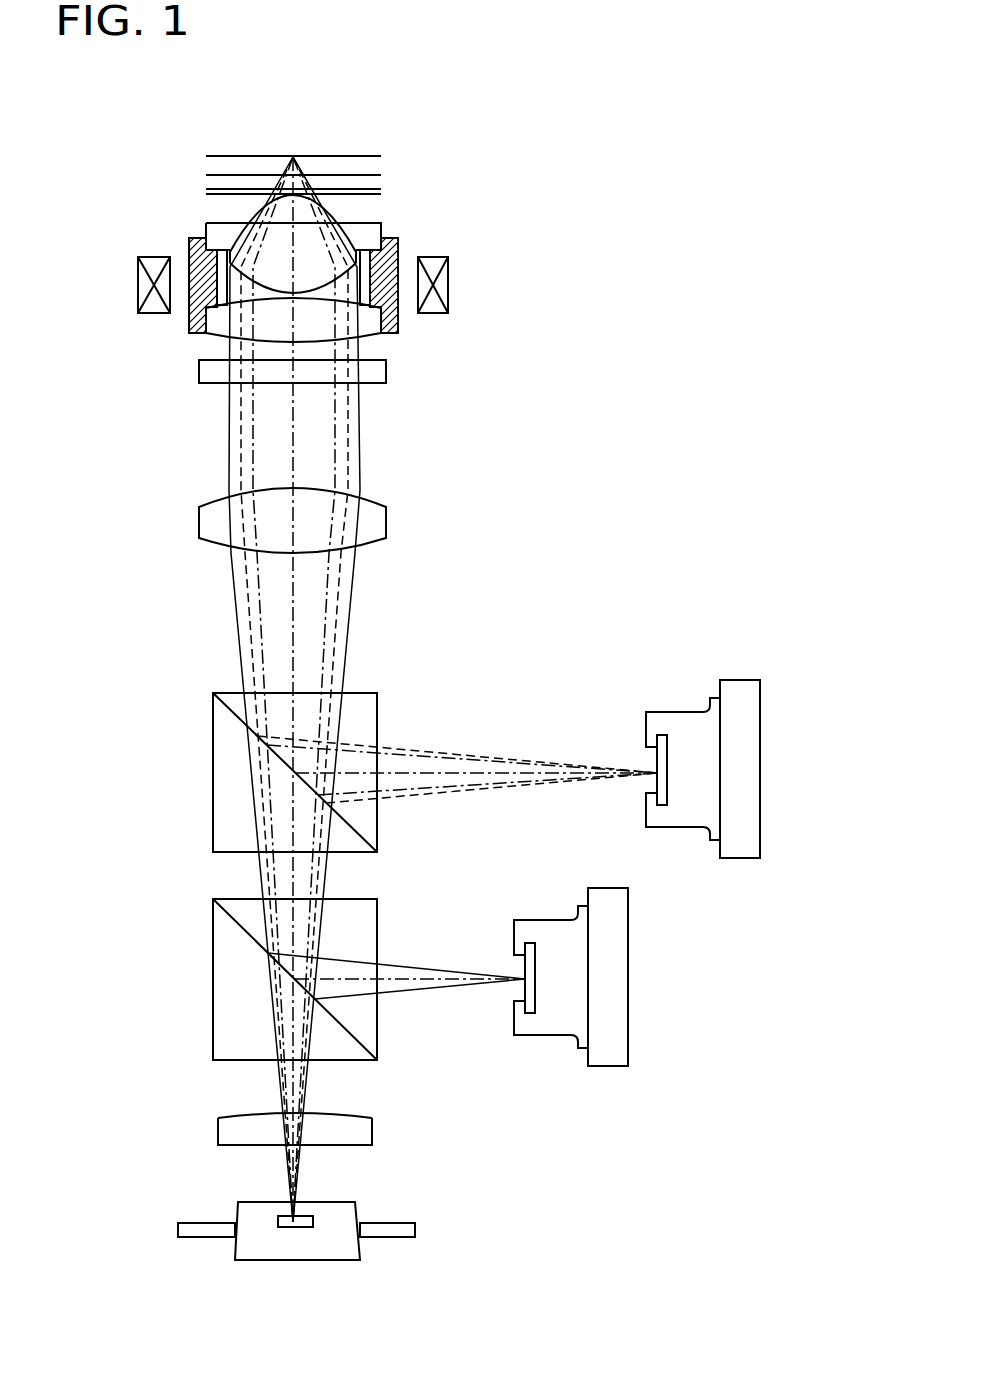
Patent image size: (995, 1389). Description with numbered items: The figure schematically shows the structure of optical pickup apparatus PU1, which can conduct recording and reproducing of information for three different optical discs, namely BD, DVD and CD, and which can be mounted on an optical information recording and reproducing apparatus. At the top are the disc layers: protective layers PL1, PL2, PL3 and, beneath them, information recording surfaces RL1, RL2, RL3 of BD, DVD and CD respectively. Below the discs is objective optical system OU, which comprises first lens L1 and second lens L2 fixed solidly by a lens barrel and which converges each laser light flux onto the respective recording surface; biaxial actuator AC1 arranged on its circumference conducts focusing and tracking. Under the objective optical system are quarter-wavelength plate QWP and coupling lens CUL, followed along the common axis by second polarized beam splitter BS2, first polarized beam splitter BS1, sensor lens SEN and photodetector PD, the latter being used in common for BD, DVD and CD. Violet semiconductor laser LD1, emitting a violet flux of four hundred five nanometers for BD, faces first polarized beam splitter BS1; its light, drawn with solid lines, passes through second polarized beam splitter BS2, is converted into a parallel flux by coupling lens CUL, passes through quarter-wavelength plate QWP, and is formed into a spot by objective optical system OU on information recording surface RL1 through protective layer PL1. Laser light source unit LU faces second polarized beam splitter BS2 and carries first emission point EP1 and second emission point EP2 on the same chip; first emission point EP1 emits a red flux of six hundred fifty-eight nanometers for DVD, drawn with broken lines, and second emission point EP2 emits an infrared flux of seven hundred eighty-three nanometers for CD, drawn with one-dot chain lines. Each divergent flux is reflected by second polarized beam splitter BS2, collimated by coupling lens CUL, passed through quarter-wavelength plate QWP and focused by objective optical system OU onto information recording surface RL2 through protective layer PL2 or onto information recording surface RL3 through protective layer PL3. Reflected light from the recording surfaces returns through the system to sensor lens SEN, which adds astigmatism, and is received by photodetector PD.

The first optical information recording medium BD is at (410, 172).
The second optical information recording medium DVD is at (410, 172).
The third optical information recording medium CD is at (410, 172).
The protective layer PL1 is at (410, 172).
The protective layer PL2 is at (410, 172).
The protective layer PL3 is at (410, 172).
The information recording surface RL1 is at (410, 172).
The information recording surface RL2 is at (410, 172).
The information recording surface RL3 is at (397, 202).
The second lens L2 is at (218, 231).
The first lens L1 is at (217, 323).
The biaxial actuator AC1 is at (448, 283).
The objective optical system OU is at (412, 323).
The λ/4 wavelength plate QWP is at (386, 372).
The optical pickup apparatus PU1 is at (605, 433).
The coupling lens CUL is at (386, 522).
The first emission point EP1 is at (664, 712).
The second emission point EP2 is at (672, 770).
The second polarized beam splitter BS2 is at (213, 773).
The laser light source unit LU is at (740, 858).
The first polarized beam splitter BS1 is at (213, 980).
The violet semiconductor laser LD1 is at (627, 1033).
The sensor lens SEN is at (372, 1130).
The photodetector PD is at (340, 1260).